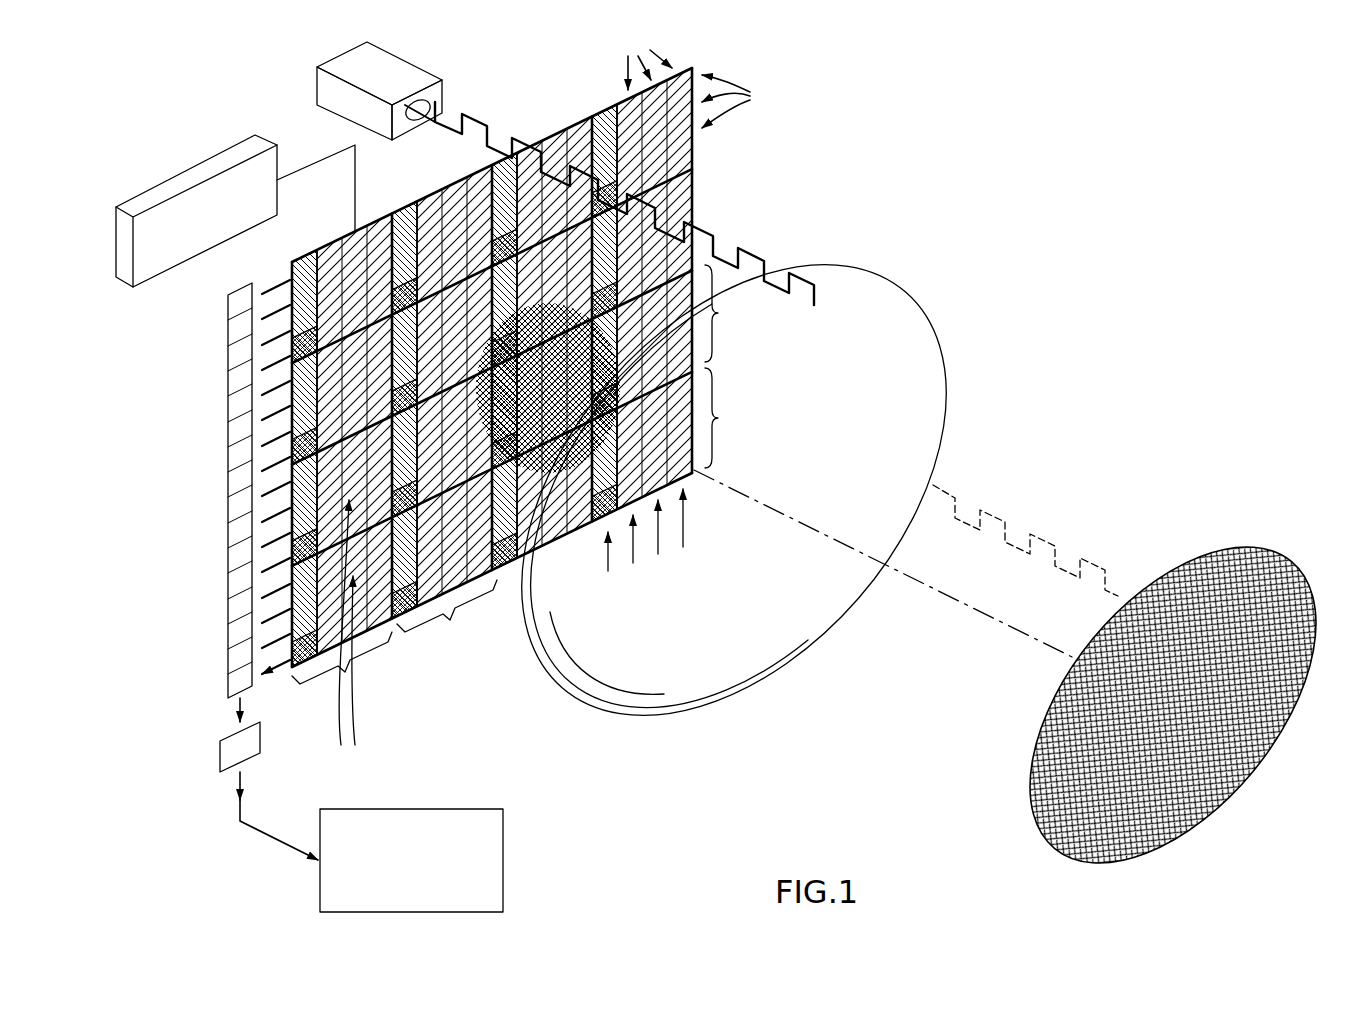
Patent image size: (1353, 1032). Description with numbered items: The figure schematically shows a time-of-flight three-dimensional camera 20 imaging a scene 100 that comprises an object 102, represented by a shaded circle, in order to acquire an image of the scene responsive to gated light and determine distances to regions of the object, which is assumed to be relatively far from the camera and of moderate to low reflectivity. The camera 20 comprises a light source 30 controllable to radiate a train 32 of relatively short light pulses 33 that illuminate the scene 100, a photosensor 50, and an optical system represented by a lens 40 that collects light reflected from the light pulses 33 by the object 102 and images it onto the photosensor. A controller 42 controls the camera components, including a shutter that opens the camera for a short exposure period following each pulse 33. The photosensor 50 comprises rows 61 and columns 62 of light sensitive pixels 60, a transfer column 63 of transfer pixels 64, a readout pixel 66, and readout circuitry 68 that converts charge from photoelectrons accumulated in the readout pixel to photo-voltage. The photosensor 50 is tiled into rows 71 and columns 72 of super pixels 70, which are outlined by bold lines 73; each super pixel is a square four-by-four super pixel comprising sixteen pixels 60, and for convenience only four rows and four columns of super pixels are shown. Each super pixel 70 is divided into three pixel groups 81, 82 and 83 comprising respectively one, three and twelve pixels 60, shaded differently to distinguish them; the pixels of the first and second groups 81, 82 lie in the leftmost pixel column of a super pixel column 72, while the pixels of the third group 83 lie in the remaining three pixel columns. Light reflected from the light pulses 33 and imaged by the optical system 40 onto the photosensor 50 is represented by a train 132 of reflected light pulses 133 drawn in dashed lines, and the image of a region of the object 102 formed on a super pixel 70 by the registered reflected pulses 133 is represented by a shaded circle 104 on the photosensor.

The TOF-3D camera 20 is at (812, 106).
The light source 30 is at (420, 70).
The train of pulses 32 is at (825, 297).
The light pulses 33 is at (742, 262).
The lens 40 is at (734, 490).
The controller 42 is at (235, 211).
The photosensor 50 is at (538, 409).
The light sensitive pixels 60 is at (598, 135).
The rows 61 is at (743, 101).
The columns 62 is at (635, 63).
The transfer column 63 is at (203, 482).
The transfer pixels 64 is at (228, 380).
The readout pixel 66 is at (258, 740).
The readout circuitry 68 is at (371, 856).
The super pixels 70 is at (311, 417).
The rows of super pixels 71 is at (725, 314).
The columns of super pixels 72 is at (350, 672).
The bold lines 73 is at (690, 66).
The pixel group 81 is at (290, 500).
The pixel group 82 is at (283, 497).
The pixel group 83 is at (356, 639).
The scene 100 is at (1023, 664).
The object 102 is at (1240, 545).
The shaded circle 104 is at (545, 640).
The train of reflected light pulses 132 is at (1092, 536).
The reflected light pulses 133 is at (1035, 540).